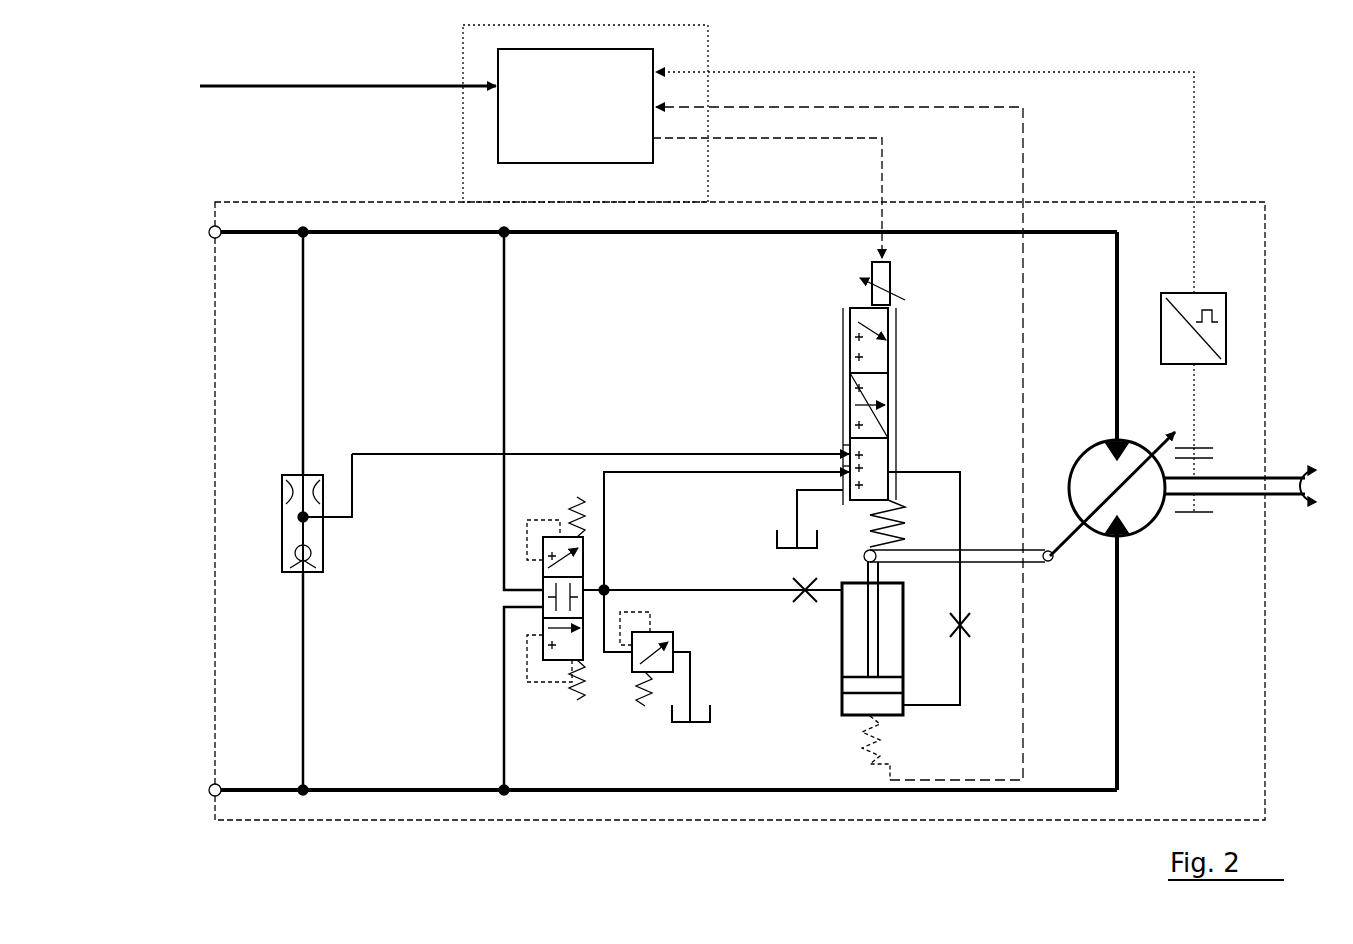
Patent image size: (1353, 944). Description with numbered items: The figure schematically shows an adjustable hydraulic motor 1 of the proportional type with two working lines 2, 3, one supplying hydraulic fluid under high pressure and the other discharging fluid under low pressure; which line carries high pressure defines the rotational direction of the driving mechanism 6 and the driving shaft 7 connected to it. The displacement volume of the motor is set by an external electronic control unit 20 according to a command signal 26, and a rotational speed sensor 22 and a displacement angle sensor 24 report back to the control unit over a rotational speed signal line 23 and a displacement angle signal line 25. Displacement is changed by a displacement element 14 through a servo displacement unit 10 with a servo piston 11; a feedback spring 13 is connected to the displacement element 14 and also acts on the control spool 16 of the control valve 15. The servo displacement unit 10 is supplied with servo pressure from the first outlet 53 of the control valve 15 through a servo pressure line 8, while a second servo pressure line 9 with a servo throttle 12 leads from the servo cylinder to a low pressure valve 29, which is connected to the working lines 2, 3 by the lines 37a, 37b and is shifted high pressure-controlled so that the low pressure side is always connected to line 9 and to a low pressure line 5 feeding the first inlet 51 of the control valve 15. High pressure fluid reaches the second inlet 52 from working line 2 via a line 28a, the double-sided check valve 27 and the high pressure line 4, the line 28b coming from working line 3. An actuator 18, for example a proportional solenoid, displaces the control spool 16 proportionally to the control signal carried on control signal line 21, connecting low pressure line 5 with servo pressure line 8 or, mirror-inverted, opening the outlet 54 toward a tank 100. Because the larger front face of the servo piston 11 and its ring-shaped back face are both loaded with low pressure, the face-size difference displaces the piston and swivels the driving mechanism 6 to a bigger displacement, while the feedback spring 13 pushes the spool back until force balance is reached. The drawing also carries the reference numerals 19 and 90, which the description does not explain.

The hydraulic motor 1 is at (1220, 200).
The working line 2 is at (268, 235).
The working line 3 is at (270, 788).
The high pressure line 4 is at (643, 452).
The low pressure line 5 is at (668, 480).
The driving mechanism 6 is at (1137, 495).
The driving shaft 7 is at (1205, 480).
The servo pressure line 8 is at (962, 690).
The servo pressure line 9 is at (715, 592).
The servo displacement unit 10 is at (935, 728).
The servo piston 11 is at (857, 683).
The servo throttle 12 is at (810, 596).
The feedback spring 13 is at (902, 525).
The displacement element 14 is at (1073, 540).
The control valve 15 is at (915, 378).
The control spool 16 is at (870, 418).
The actuator 18 is at (880, 273).
The valve position 19 is at (887, 332).
The electronic control unit 20 is at (594, 128).
The control signal line 21 is at (882, 180).
The rotational speed sensor 22 is at (1210, 330).
The rotational speed signal line 23 is at (842, 72).
The displacement angle sensor 24 is at (880, 745).
The displacement angle signal line 25 is at (1023, 152).
The command signal 26 is at (308, 88).
The double-sided check valve 27 is at (312, 535).
The line 28a is at (303, 362).
The line 28b is at (303, 700).
The low pressure valve 29 is at (565, 640).
The line 37a is at (503, 313).
The line 37b is at (498, 690).
The first inlet 51 is at (840, 466).
The second inlet 52 is at (840, 447).
The first outlet 53 is at (853, 490).
The outlet 54 is at (866, 528).
The pressure relief valve 90 is at (652, 678).
The tank 100 is at (790, 533).